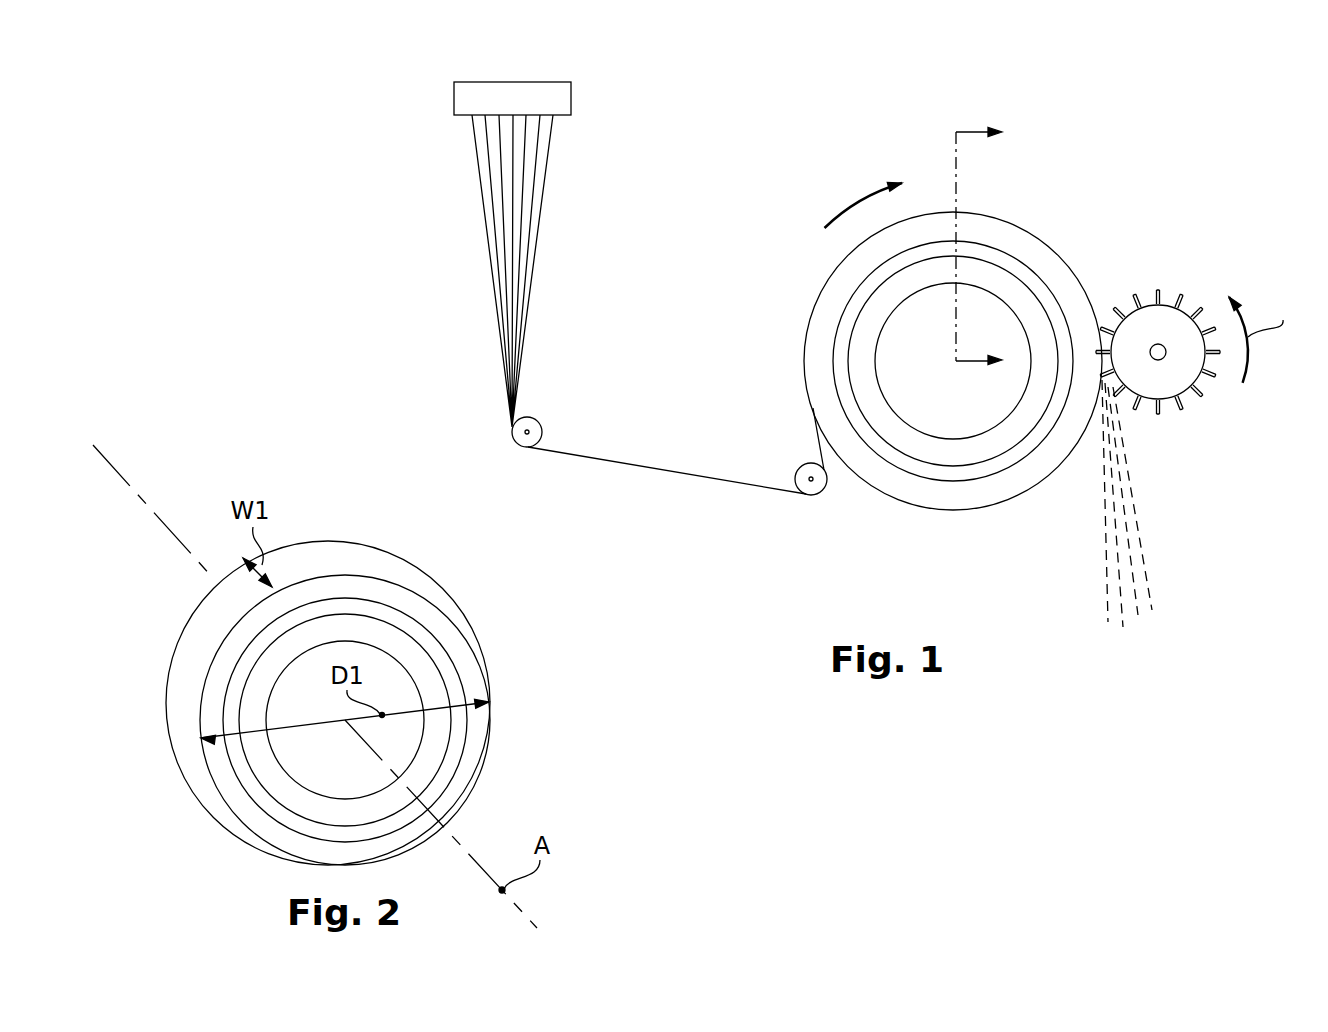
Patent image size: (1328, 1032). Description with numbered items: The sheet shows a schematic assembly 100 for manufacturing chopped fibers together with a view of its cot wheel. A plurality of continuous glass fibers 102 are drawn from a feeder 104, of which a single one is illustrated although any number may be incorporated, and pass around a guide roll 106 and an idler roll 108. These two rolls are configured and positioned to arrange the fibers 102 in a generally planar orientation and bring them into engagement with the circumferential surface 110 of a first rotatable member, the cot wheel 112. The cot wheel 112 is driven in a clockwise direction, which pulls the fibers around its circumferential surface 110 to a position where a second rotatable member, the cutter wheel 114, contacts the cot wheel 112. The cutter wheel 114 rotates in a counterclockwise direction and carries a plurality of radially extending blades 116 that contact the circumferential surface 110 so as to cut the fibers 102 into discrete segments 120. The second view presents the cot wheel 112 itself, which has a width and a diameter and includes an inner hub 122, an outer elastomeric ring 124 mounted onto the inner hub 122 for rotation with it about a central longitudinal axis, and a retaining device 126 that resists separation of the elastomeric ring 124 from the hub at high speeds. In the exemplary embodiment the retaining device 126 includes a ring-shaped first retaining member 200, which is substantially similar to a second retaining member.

In FIG. 1, the assembly 100 is at (1122, 170).
In FIG. 1, the continuous glass fibers 102 is at (451, 258).
In FIG. 1, the feeder 104 is at (541, 100).
In FIG. 1, the guide roll 106 is at (542, 432).
In FIG. 1, the idler roll 108 is at (818, 497).
In FIG. 1, the circumferential surface 110 is at (912, 508).
In FIG. 2, the circumferential surface 110 is at (312, 557).
In FIG. 1, the cot wheel 112 is at (968, 542).
In FIG. 2, the cot wheel 112 is at (155, 598).
In FIG. 1, the cutter wheel 114 is at (1174, 327).
In FIG. 1, the radially extending blades 116 is at (1197, 404).
In FIG. 1, the discrete segments 120 is at (1164, 535).
In FIG. 2, the inner hub 122 is at (392, 637).
In FIG. 2, the outer elastomeric ring 124 is at (213, 695).
In FIG. 2, the retaining device 126 is at (454, 758).
In FIG. 2, the first retaining member 200 is at (440, 658).